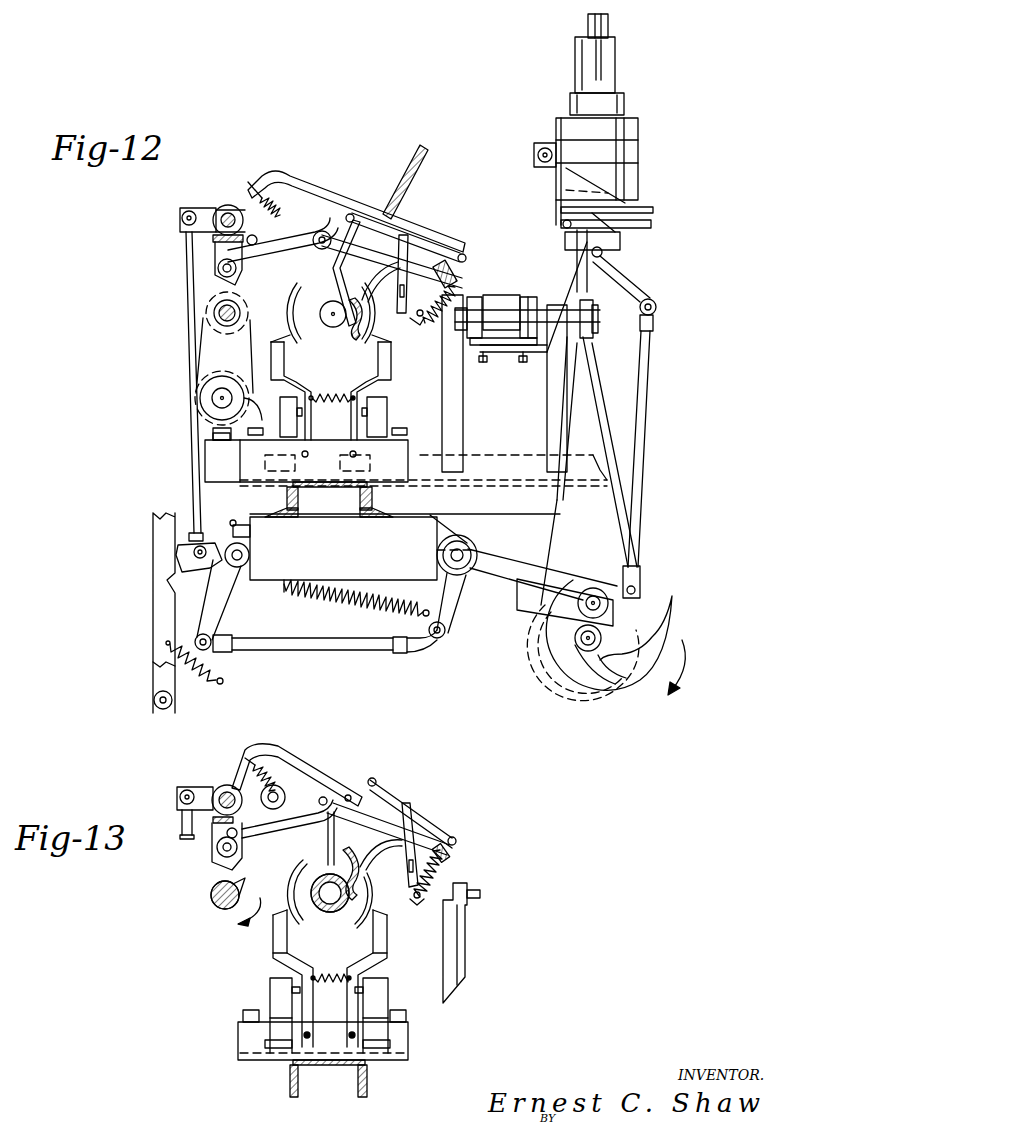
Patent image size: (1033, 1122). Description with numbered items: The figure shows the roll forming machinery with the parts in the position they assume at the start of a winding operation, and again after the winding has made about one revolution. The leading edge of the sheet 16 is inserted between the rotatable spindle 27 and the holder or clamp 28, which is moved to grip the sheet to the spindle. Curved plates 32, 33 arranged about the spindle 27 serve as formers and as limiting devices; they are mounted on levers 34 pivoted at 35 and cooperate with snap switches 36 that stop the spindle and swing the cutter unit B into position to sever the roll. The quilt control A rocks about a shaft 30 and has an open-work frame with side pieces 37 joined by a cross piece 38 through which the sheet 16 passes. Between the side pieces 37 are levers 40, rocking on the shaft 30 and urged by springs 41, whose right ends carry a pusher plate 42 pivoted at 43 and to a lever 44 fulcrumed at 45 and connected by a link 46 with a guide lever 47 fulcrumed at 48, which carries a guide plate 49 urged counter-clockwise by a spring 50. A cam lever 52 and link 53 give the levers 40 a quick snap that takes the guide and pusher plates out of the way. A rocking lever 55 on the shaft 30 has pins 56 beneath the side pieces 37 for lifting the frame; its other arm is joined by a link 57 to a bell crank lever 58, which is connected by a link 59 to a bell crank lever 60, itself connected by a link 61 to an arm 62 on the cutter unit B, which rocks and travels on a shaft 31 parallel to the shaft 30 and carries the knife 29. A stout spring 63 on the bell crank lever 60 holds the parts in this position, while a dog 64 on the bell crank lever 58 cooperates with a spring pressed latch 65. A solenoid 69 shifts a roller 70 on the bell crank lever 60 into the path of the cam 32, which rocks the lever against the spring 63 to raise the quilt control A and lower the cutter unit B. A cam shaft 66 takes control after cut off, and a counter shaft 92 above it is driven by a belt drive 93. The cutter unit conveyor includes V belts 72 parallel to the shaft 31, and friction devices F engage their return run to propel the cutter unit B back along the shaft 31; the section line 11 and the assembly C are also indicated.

In FIG. 12, the section line 11 is at (148, 348).
In FIG. 12, the sheet 16 is at (410, 185).
In FIG. 13, the sheet 16 is at (345, 915).
In FIG. 12, the rotatable spindle 27 is at (320, 320).
In FIG. 13, the rotatable spindle 27 is at (330, 893).
In FIG. 12, the holder or clamp 28 is at (391, 353).
In FIG. 13, the holder or clamp 28 is at (330, 978).
In FIG. 12, the knife 29 is at (608, 26).
In FIG. 12, the shaft 30 is at (222, 212).
In FIG. 13, the shaft 30 is at (213, 812).
In FIG. 12, the shaft 31 is at (603, 252).
In FIG. 12, the cam 32 is at (290, 300).
In FIG. 13, the cam 32 is at (296, 878).
In FIG. 12, the curved plate 33 is at (352, 337).
In FIG. 13, the curved plate 33 is at (372, 906).
In FIG. 12, the levers 34 is at (322, 389).
In FIG. 13, the levers 34 is at (350, 970).
In FIG. 12, the pivot 35 is at (352, 451).
In FIG. 13, the pivot 35 is at (350, 1033).
In FIG. 12, the snap switches 36 is at (282, 397).
In FIG. 13, the snap switches 36 is at (275, 978).
In FIG. 12, the side pieces 37 is at (330, 208).
In FIG. 13, the side pieces 37 is at (326, 797).
In FIG. 12, the cross piece 38 is at (457, 248).
In FIG. 13, the cross piece 38 is at (448, 850).
In FIG. 12, the levers 40 is at (275, 168).
In FIG. 13, the levers 40 is at (262, 742).
In FIG. 12, the springs 41 is at (250, 186).
In FIG. 13, the springs 41 is at (270, 775).
In FIG. 12, the pusher plate 42 is at (340, 222).
In FIG. 13, the pusher plate 42 is at (328, 853).
In FIG. 12, the pivot 43 is at (328, 243).
In FIG. 13, the pivot 43 is at (350, 795).
In FIG. 12, the lever 44 is at (398, 230).
In FIG. 13, the lever 44 is at (420, 793).
In FIG. 12, the fulcrum 45 is at (462, 258).
In FIG. 13, the fulcrum 45 is at (456, 840).
In FIG. 12, the link 46 is at (410, 240).
In FIG. 13, the link 46 is at (411, 818).
In FIG. 12, the guide lever 47 is at (382, 256).
In FIG. 13, the guide lever 47 is at (395, 862).
In FIG. 12, the fulcrum 48 is at (418, 322).
In FIG. 13, the fulcrum 48 is at (411, 895).
In FIG. 12, the guide plate 49 is at (372, 282).
In FIG. 13, the guide plate 49 is at (378, 848).
In FIG. 12, the spring 50 is at (473, 297).
In FIG. 13, the spring 50 is at (432, 880).
In FIG. 12, the cam lever 52 is at (240, 278).
In FIG. 13, the cam lever 52 is at (238, 860).
In FIG. 12, the link 53 is at (278, 258).
In FIG. 13, the link 53 is at (275, 826).
In FIG. 12, the rocking lever 55 is at (180, 208).
In FIG. 13, the rocking lever 55 is at (185, 787).
In FIG. 12, the pins 56 is at (257, 242).
In FIG. 13, the pins 56 is at (280, 802).
In FIG. 12, the link 57 is at (186, 258).
In FIG. 13, the link 57 is at (182, 826).
In FIG. 12, the bell crank lever 58 is at (228, 614).
In FIG. 12, the link 59 is at (292, 652).
In FIG. 12, the bell crank lever 60 is at (492, 582).
In FIG. 12, the link 61 is at (646, 434).
In FIG. 12, the arm 62 is at (640, 285).
In FIG. 12, the stout spring 63 is at (330, 600).
In FIG. 12, the dog 64 is at (194, 613).
In FIG. 12, the latch 65 is at (153, 550).
In FIG. 12, the cam shaft 66 is at (215, 396).
In FIG. 12, the solenoid 69 is at (512, 607).
In FIG. 12, the roller 70 is at (600, 604).
In FIG. 12, the V belts 72 is at (526, 297).
In FIG. 12, the counter shaft 92 is at (218, 305).
In FIG. 13, the counter shaft 92 is at (211, 895).
In FIG. 12, the belt drive 93 is at (200, 356).
In FIG. 12, the quilt control A is at (330, 187).
In FIG. 12, the cutter unit B is at (642, 143).
In FIG. 12, the assembly C is at (512, 270).
In FIG. 12, the friction devices F is at (508, 352).